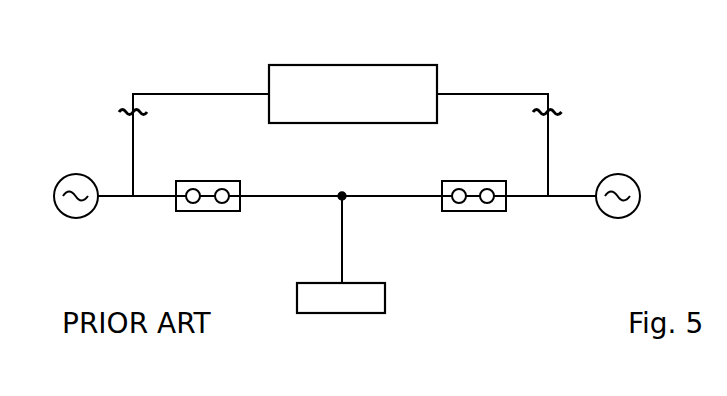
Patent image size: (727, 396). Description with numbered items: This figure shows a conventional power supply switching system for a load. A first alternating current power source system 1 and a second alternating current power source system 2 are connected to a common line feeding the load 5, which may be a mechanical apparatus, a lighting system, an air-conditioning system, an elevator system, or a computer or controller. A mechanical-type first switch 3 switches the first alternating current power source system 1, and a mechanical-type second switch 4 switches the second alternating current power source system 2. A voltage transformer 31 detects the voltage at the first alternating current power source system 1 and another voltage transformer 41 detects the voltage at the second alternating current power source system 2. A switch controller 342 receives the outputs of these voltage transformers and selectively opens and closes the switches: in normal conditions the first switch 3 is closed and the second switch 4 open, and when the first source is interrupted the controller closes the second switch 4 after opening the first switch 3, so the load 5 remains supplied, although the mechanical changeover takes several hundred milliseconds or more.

The first alternating current power source system 1 is at (58, 215).
The second alternating current power source system 2 is at (637, 217).
The first switch 3 is at (193, 218).
The second switch 4 is at (488, 217).
The load 5 is at (338, 320).
The voltage transformer 31 is at (127, 110).
The voltage transformer 41 is at (552, 107).
The switch controller 342 is at (387, 64).